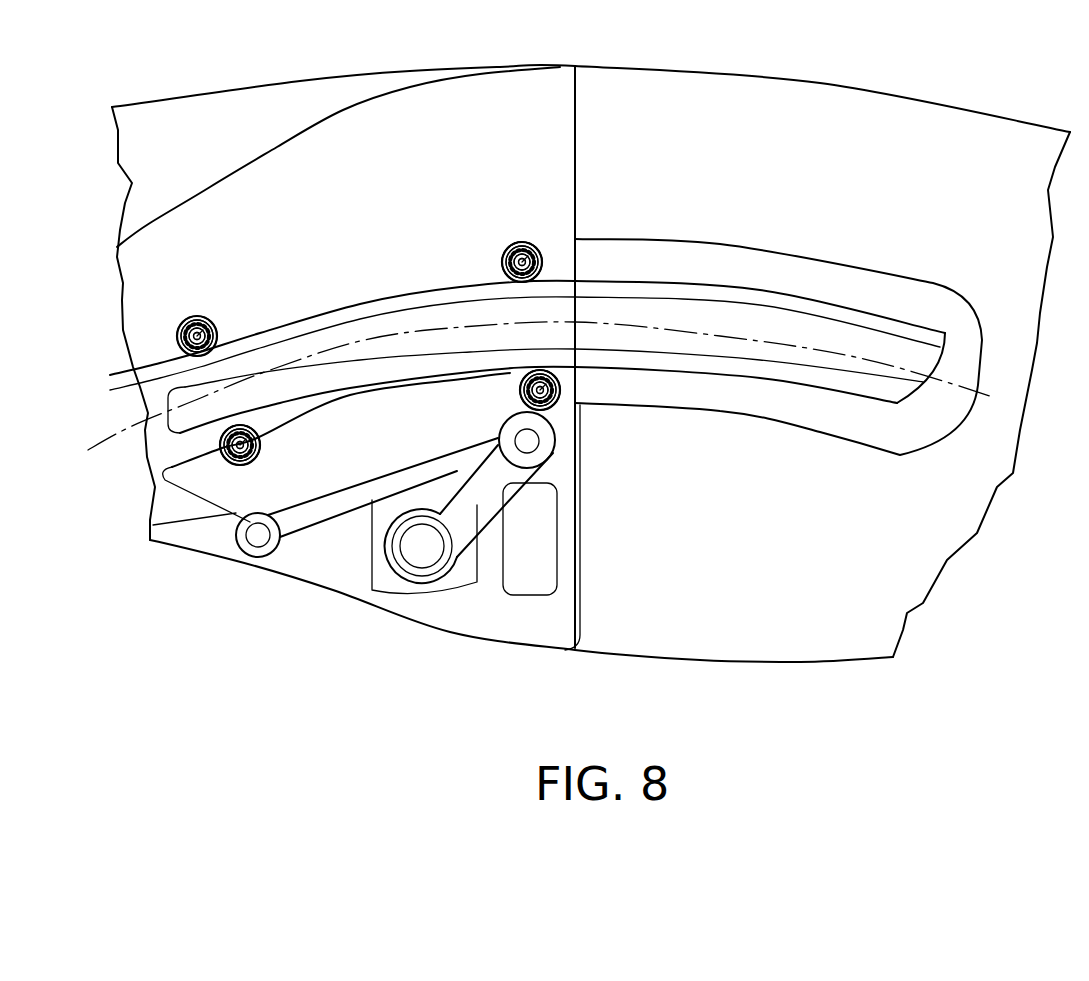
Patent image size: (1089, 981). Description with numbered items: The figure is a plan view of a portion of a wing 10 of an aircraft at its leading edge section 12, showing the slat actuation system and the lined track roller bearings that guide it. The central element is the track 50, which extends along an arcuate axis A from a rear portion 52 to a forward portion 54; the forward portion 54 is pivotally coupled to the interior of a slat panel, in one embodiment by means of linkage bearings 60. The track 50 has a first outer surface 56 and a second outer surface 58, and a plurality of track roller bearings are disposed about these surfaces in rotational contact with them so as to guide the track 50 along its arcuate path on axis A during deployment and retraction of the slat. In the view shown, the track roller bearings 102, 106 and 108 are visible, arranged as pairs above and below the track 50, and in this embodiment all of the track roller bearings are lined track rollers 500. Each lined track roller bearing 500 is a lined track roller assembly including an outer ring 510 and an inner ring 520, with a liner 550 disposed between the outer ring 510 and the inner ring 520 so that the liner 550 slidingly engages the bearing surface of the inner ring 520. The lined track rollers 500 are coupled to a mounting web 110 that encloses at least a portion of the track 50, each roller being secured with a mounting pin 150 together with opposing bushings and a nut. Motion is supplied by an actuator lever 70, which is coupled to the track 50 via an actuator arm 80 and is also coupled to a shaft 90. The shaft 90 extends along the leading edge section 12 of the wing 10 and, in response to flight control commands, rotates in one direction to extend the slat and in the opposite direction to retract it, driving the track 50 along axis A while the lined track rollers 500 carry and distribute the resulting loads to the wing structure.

The wing 10 is at (785, 665).
The leading edge section 12 is at (630, 66).
The track 50 is at (527, 352).
The rear portion 52 is at (910, 323).
The forward portion 54 is at (145, 340).
The first outer surface 56 is at (343, 315).
The second outer surface 58 is at (433, 381).
The linkage bearings 60 is at (128, 258).
The actuator lever 70 is at (483, 535).
The actuator arm 80 is at (410, 465).
The shaft 90 is at (420, 556).
The track roller bearing 102 is at (520, 243).
The track roller bearing 106 is at (260, 456).
The track roller bearing 108 is at (567, 394).
The mounting web 110 is at (803, 256).
The mounting pin 150 is at (197, 316).
The lined track roller bearing 500 is at (172, 349).
The outer ring 510 is at (217, 328).
The inner ring 520 is at (150, 392).
The liner 550 is at (218, 342).
The arcuate axis A is at (977, 395).